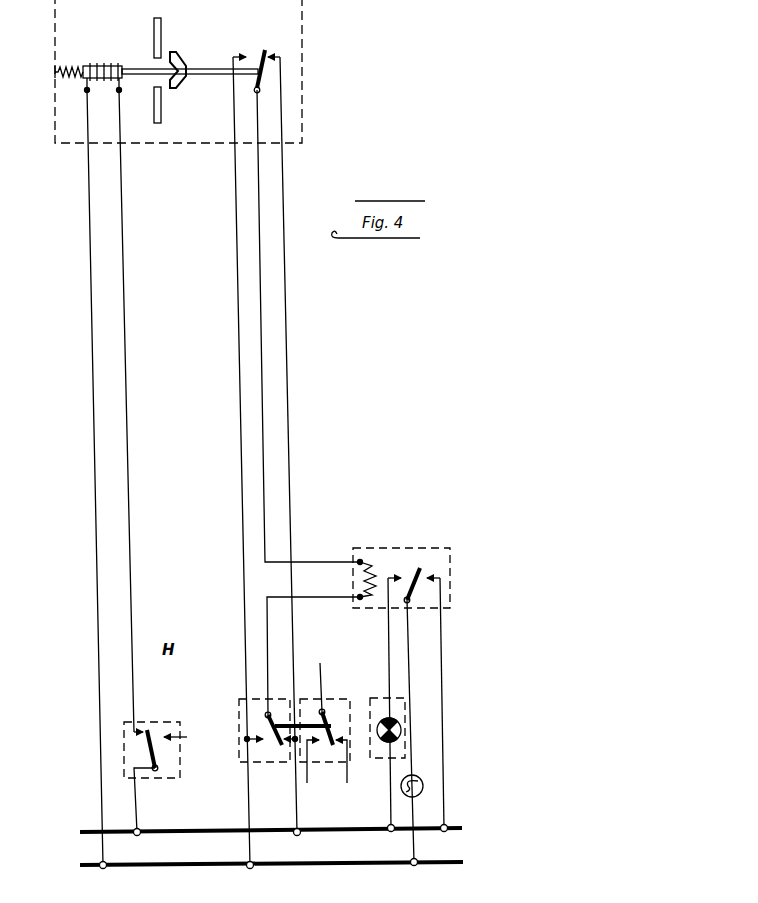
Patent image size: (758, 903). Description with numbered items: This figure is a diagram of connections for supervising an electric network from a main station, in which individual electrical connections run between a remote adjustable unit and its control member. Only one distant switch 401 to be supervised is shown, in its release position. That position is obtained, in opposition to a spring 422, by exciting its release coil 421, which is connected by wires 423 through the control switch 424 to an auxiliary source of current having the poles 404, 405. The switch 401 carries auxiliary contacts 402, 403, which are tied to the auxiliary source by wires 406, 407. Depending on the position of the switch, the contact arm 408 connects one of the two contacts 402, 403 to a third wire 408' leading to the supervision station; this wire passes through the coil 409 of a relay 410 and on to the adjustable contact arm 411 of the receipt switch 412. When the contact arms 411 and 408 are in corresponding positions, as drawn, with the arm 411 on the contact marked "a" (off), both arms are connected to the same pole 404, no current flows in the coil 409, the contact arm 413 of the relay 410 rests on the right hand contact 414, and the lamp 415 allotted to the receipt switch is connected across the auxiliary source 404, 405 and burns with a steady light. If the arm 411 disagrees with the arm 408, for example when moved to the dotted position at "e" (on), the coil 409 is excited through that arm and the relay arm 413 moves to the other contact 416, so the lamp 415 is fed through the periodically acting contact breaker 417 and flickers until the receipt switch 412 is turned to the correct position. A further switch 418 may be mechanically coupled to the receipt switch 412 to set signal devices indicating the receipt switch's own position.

The switch 401 is at (304, 73).
The auxiliary contact 402 is at (242, 54).
The auxiliary contact 403 is at (268, 50).
The pole 404 is at (196, 828).
The pole 405 is at (200, 867).
The wire 406 is at (236, 340).
The wire 407 is at (288, 402).
The contact arm 408 is at (226, 97).
The third wire 408' is at (277, 326).
The coil 409 is at (371, 561).
The relay 410 is at (451, 574).
The adjustable contact arm 411 is at (270, 750).
The receipt switch 412 is at (240, 740).
The contact arm 413 is at (412, 603).
The right hand contact 414 is at (417, 576).
The lamp 415 is at (424, 786).
The contact 416 is at (388, 592).
The contact breaker 417 is at (398, 720).
The further switch 418 is at (342, 698).
The release coil 421 is at (116, 64).
The spring 422 is at (72, 66).
The wires 423 is at (124, 348).
The control switch 424 is at (166, 722).